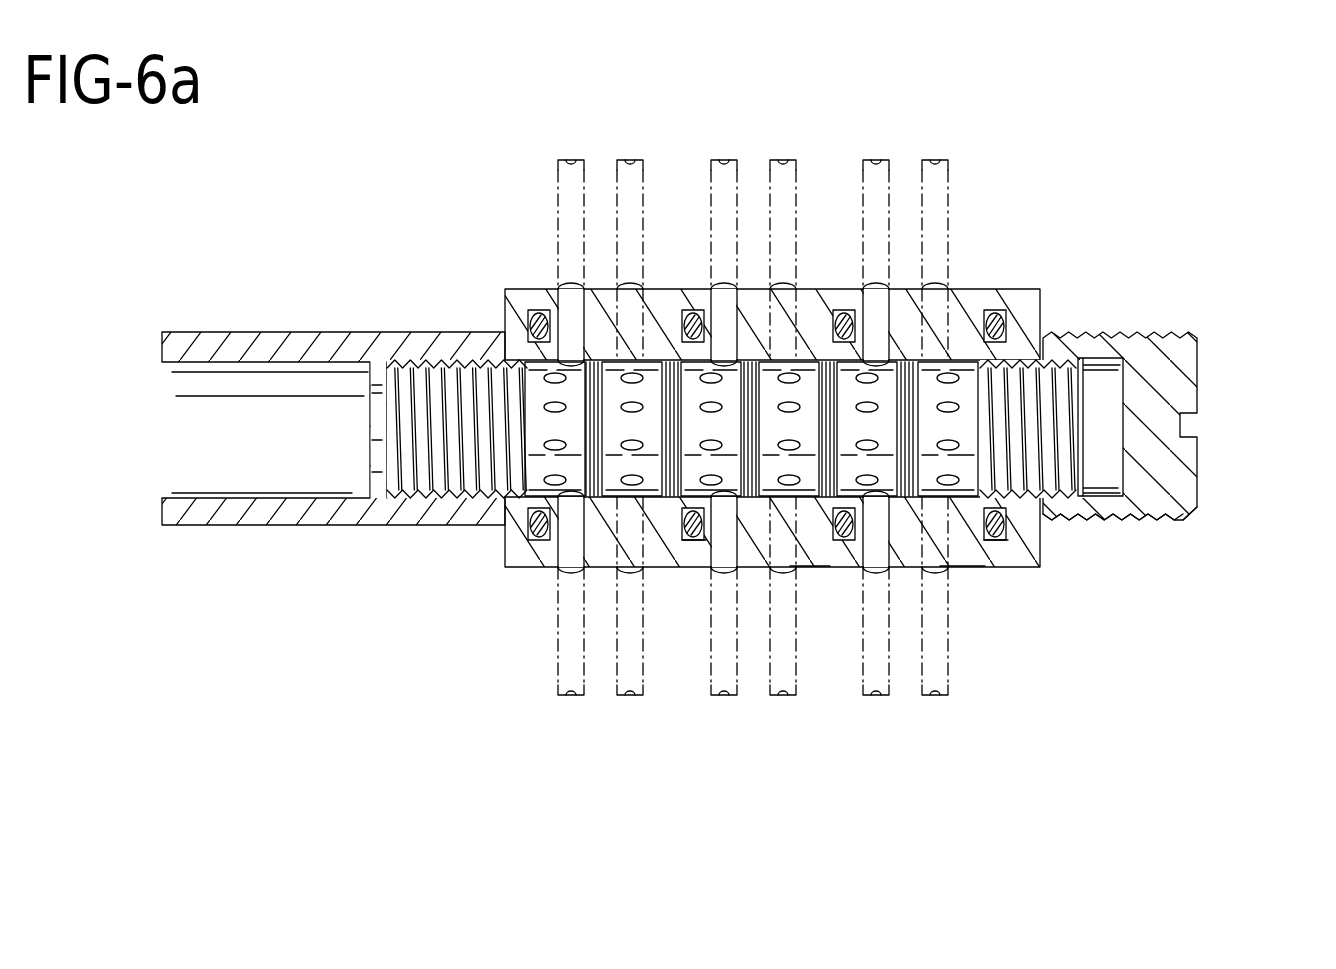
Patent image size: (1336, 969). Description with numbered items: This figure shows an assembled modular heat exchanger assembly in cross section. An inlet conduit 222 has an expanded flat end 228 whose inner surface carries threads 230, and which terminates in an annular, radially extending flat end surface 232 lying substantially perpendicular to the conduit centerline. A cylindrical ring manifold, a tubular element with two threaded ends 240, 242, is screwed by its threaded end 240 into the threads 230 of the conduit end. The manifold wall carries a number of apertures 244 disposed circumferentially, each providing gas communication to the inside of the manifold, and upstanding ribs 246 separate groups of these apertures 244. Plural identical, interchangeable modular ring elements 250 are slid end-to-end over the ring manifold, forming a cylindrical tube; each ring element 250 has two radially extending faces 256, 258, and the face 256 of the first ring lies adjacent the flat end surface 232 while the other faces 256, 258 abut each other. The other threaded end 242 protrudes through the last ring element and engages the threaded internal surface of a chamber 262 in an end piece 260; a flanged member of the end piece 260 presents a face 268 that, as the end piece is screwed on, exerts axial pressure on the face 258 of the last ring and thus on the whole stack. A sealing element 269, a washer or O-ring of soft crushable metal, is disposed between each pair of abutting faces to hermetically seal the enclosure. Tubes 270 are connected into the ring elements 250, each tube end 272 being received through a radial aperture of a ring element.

The inlet conduit 222 is at (214, 332).
The expanded flat end 228 is at (517, 289).
The threads 230 is at (435, 498).
The flat end surface 232 is at (548, 567).
The threaded end 240 is at (365, 525).
The threaded end 242 is at (1065, 335).
The apertures 244 is at (712, 360).
The upstanding ribs 246 is at (918, 362).
The modular ring elements 250 is at (963, 567).
The radially extending face 256 is at (810, 567).
The radially extending face 258 is at (706, 567).
The end piece 260 is at (1147, 527).
The chamber 262 is at (1043, 475).
The face 268 is at (980, 306).
The sealing element 269 is at (510, 328).
The tubes 270 is at (878, 160).
The tube end 272 is at (541, 277).